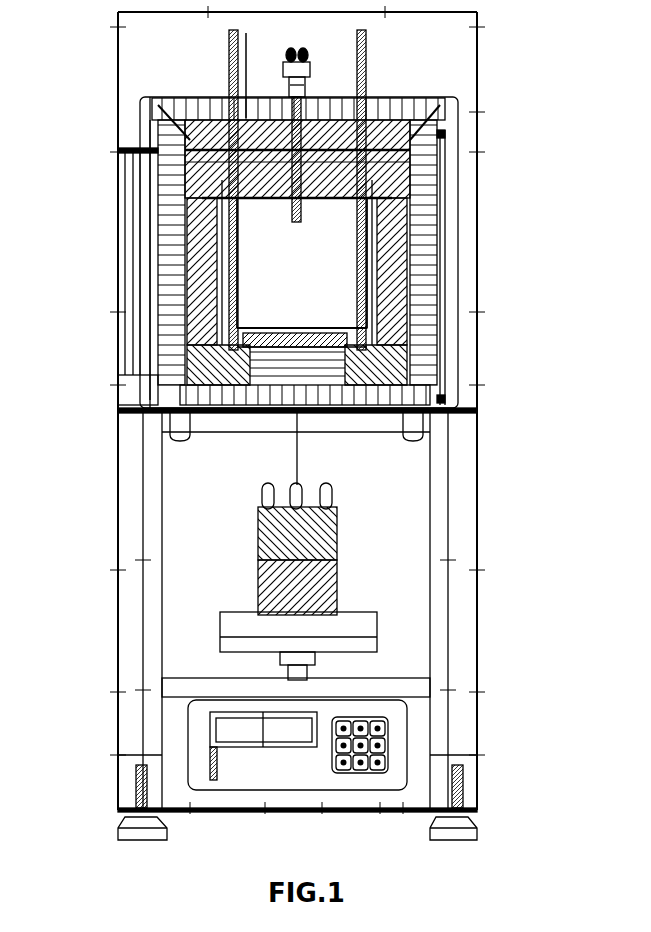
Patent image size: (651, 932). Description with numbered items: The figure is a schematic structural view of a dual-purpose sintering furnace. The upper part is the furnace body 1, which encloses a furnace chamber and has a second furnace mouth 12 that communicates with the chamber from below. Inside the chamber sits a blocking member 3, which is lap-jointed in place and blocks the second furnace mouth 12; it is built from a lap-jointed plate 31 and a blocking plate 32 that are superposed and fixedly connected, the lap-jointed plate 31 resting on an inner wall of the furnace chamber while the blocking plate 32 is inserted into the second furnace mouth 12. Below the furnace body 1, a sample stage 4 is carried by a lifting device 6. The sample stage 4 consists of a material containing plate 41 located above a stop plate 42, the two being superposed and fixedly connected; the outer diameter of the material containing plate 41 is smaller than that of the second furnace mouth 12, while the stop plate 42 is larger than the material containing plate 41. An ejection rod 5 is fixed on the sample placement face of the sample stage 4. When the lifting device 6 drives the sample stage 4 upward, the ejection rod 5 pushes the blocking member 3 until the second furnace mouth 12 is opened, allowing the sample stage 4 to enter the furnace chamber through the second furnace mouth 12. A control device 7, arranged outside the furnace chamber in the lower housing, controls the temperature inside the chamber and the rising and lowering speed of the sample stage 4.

The furnace body 1 is at (200, 77).
The second furnace mouth 12 is at (150, 330).
The blocking member 3 is at (537, 252).
The lap-jointed plate 31 is at (307, 330).
The blocking plate 32 is at (335, 320).
The sample stage 4 is at (540, 496).
The material containing plate 41 is at (337, 548).
The stop plate 42 is at (365, 620).
The ejection rod 5 is at (262, 494).
The lifting device 6 is at (287, 655).
The control device 7 is at (243, 769).